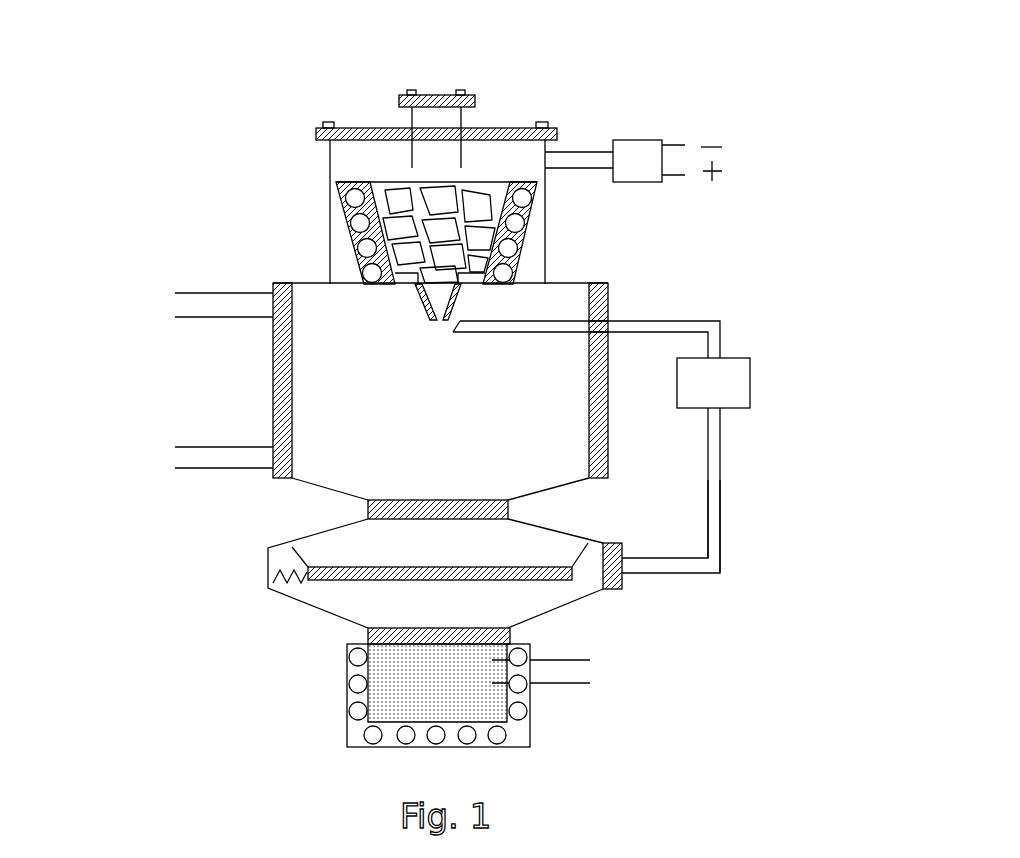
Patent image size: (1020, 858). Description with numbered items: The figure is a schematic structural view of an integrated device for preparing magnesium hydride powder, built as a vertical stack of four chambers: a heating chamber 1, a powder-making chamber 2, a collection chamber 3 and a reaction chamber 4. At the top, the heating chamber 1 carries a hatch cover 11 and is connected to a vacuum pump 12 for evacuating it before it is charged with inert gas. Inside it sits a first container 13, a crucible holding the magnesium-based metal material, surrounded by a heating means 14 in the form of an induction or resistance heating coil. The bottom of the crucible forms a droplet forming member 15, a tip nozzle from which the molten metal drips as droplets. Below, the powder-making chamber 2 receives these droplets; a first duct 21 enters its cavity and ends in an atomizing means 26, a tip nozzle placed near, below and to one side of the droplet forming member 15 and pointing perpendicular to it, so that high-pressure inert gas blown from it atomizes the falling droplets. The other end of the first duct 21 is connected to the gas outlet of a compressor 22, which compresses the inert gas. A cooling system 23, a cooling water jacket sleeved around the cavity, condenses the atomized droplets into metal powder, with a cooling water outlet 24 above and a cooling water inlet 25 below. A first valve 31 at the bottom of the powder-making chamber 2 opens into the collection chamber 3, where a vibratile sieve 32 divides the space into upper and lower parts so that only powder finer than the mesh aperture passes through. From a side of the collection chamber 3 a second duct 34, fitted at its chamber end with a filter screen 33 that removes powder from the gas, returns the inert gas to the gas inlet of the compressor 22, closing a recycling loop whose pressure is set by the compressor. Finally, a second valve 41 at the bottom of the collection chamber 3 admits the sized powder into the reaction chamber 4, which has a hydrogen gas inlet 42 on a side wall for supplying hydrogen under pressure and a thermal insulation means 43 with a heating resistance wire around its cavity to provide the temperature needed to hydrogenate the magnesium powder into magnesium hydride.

The heating chamber 1 is at (322, 236).
The hatch cover 11 is at (440, 92).
The vacuum pump 12 is at (637, 137).
The first container 13 is at (495, 238).
The heating means 14 is at (520, 202).
The droplet forming member 15 is at (430, 322).
The powder-making chamber 2 is at (268, 400).
The first duct 21 is at (688, 327).
The compressor 22 is at (710, 390).
The cooling system 23 is at (593, 313).
The cooling water outlet 24 is at (172, 307).
The cooling water inlet 25 is at (172, 453).
The atomizing means 26 is at (455, 334).
The collection chamber 3 is at (257, 580).
The first valve 31 is at (477, 513).
The sieve 32 is at (390, 566).
The filter screen 33 is at (620, 582).
The second duct 34 is at (723, 483).
The reaction chamber 4 is at (345, 705).
The second valve 41 is at (513, 637).
The hydrogen gas inlet 42 is at (563, 673).
The thermal insulation means 43 is at (522, 717).